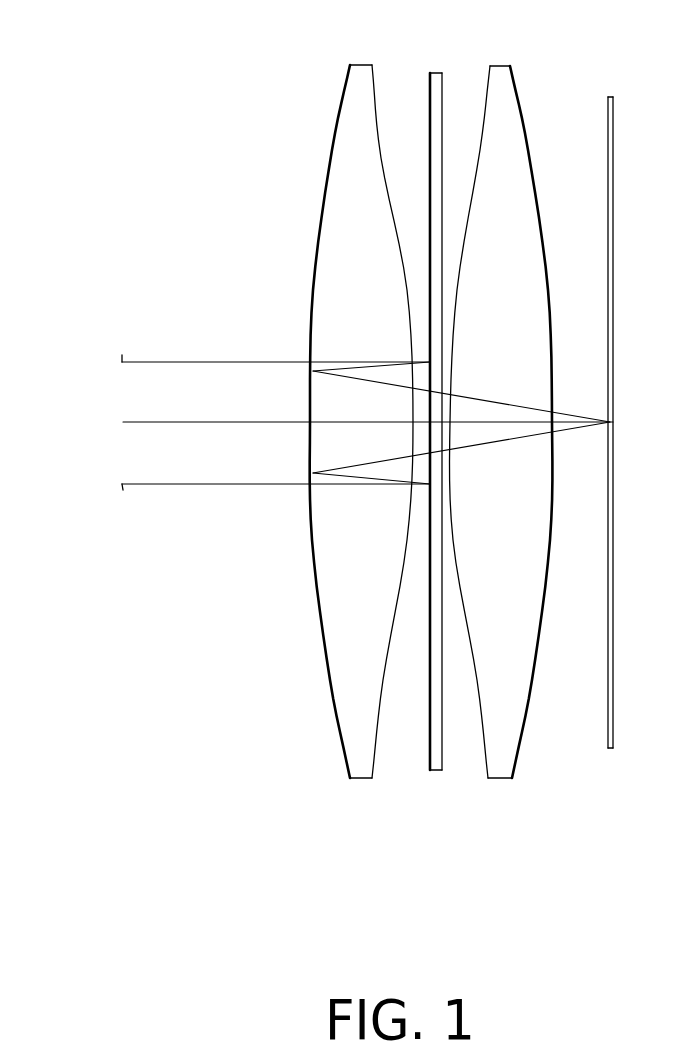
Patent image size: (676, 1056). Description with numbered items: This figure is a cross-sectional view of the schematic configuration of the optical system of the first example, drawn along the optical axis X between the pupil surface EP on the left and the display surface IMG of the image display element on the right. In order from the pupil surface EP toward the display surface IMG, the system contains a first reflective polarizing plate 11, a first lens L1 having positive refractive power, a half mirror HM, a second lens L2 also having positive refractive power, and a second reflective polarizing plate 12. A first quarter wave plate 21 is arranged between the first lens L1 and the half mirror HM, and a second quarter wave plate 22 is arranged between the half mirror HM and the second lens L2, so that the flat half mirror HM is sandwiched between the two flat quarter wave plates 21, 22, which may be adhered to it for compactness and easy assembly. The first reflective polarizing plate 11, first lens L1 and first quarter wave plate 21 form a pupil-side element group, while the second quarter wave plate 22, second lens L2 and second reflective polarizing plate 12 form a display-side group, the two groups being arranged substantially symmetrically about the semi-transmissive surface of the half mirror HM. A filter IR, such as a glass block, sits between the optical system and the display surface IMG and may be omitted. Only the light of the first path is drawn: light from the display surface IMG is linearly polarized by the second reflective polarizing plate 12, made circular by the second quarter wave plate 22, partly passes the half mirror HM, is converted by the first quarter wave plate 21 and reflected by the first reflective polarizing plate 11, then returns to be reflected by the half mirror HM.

The first lens L1 is at (355, 403).
The first reflective polarizing plate 11 is at (332, 150).
The second lens L2 is at (501, 405).
The second reflective polarizing plate 12 is at (515, 82).
The half mirror HM is at (435, 400).
The first quarter wave plate 21 is at (430, 112).
The second quarter wave plate 22 is at (442, 130).
The filter IR is at (620, 438).
The display surface IMG is at (613, 744).
The pupil surface EP is at (124, 489).
The optical axis X is at (128, 421).